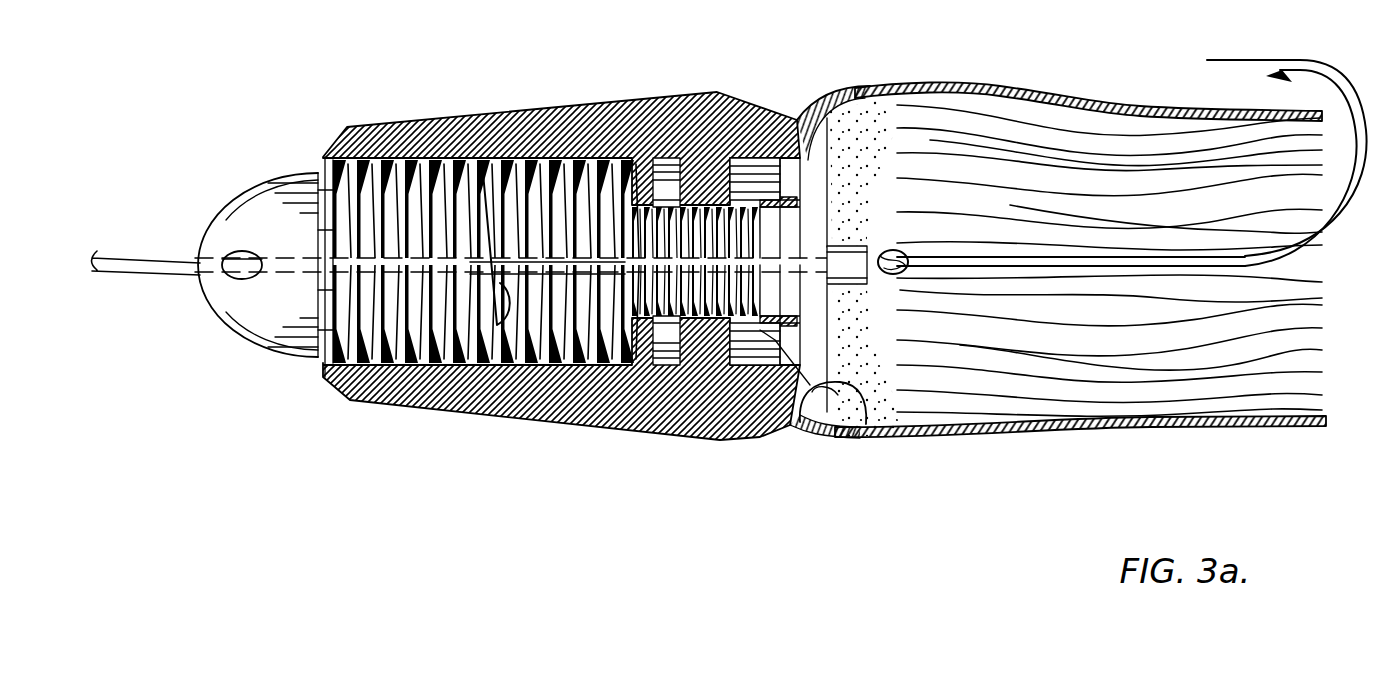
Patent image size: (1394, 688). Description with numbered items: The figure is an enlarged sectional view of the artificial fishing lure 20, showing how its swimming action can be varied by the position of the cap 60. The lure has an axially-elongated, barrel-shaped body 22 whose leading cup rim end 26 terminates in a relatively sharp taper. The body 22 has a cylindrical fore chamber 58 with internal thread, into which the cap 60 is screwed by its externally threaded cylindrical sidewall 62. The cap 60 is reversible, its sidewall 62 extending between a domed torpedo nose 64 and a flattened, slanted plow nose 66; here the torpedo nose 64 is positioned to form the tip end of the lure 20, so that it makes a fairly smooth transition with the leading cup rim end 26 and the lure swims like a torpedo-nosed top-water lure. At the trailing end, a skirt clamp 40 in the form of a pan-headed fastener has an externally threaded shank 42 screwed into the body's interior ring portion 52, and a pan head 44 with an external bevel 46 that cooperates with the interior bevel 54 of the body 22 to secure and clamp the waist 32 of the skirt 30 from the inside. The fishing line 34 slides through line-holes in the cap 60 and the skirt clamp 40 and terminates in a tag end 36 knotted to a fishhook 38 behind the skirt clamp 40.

The artificial fishing lure 20 is at (266, 146).
The axially-elongated body 22 is at (541, 86).
The leading cup rim end 26 is at (323, 152).
The skirt 30 is at (930, 452).
The waist 32 is at (843, 395).
The fishing line 34 is at (172, 266).
The tag end 36 is at (890, 270).
The fishhook 38 is at (1338, 212).
The skirt clamp 40 is at (773, 195).
The shank 42 is at (797, 200).
The pan head 44 is at (695, 440).
The external bevel 46 is at (740, 437).
The interior ring portion 52 is at (668, 100).
The interior bevel 54 is at (836, 388).
The cylindrical fore chamber 58 is at (482, 160).
The cap 60 is at (238, 184).
The cylindrical sidewall 62 is at (386, 130).
The torpedo nose 64 is at (228, 227).
The plow nose 66 is at (500, 422).